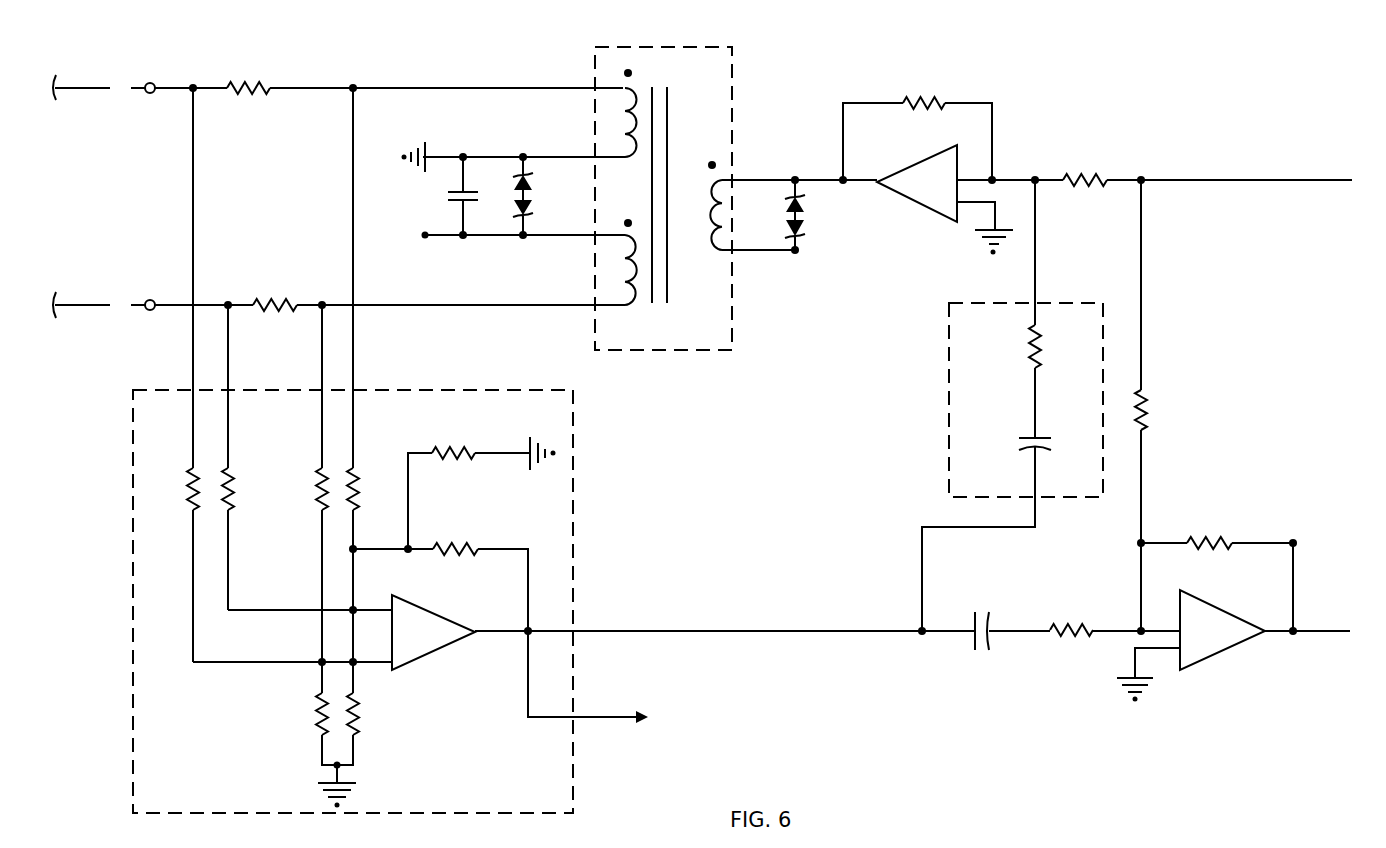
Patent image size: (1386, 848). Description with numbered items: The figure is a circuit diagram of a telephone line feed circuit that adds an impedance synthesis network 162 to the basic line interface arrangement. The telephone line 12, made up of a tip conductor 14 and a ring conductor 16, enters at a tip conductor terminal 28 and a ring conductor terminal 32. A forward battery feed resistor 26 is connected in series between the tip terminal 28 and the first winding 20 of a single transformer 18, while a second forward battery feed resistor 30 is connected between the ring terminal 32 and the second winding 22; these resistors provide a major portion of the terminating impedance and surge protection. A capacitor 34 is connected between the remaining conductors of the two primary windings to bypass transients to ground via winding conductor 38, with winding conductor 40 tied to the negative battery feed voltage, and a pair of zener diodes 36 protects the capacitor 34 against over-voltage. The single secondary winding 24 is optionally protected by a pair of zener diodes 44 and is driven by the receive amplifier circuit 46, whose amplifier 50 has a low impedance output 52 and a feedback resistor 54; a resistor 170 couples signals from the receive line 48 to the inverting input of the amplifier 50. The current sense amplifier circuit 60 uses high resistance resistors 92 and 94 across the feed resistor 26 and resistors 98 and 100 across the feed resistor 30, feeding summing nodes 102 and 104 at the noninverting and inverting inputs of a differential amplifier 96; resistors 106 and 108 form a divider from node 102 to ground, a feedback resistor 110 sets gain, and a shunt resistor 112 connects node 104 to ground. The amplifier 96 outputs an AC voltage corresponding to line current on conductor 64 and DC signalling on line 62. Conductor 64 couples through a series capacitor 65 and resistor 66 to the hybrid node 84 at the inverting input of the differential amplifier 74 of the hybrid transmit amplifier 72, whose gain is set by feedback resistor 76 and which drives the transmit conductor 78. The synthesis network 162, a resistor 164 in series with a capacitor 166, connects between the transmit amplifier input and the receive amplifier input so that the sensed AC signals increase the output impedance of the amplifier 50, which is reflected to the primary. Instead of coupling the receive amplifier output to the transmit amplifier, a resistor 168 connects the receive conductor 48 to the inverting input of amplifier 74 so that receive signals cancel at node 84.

The telephone line 12 is at (73, 57).
The tip conductor 14 is at (93, 88).
The ring conductor 16 is at (73, 305).
The transformer 18 is at (655, 47).
The first winding 20 is at (624, 88).
The second winding 22 is at (625, 305).
The secondary winding 24 is at (728, 180).
The forward battery feed resistor 26 is at (244, 82).
The telephone line tip conductor terminal 28 is at (156, 84).
The second forward battery feed resistor 30 is at (270, 299).
The telephone line ring conductor terminal 32 is at (156, 301).
The capacitor 34 is at (448, 196).
The pair of zener diodes 36 is at (536, 198).
The transformer winding conductor 38 is at (440, 157).
The transformer winding conductor 40 is at (450, 237).
The pair of zener diodes 44 is at (808, 212).
The receive amplifier circuit 46 is at (958, 72).
The receive line (RX) 48 is at (1332, 182).
The amplifier 50 is at (925, 200).
The low impedance output 52 is at (870, 180).
The feedback resistor 54 is at (920, 97).
The current sense amplifier circuit 60 is at (573, 485).
The line 62 is at (612, 717).
The conductor 64 is at (585, 631).
The series capacitor 65 is at (990, 625).
The resistor 66 is at (1080, 624).
The hybrid transmit amplifier 72 is at (1263, 517).
The differential amplifier 74 is at (1215, 605).
The feedback resistor 76 is at (1205, 537).
The transmit (TX) conductor 78 is at (1320, 631).
The hybrid node 84 is at (1145, 543).
The high resistance value resistor 92 is at (190, 490).
The high resistance value resistor 94 is at (357, 487).
The differential amplifier 96 is at (430, 660).
The high resistance resistor 98 is at (232, 487).
The high resistance resistor 100 is at (318, 490).
The summing node 102 is at (320, 665).
The summing node 104 is at (356, 608).
The resistor 106 is at (318, 720).
The resistor 108 is at (357, 710).
The feedback resistor 110 is at (455, 543).
The shunt resistor 112 is at (455, 447).
The impedance synthesis network 162 is at (1060, 303).
The resistor 164 is at (1030, 362).
The capacitor 166 is at (1030, 447).
The resistor 168 is at (1145, 395).
The resistor 170 is at (1085, 174).